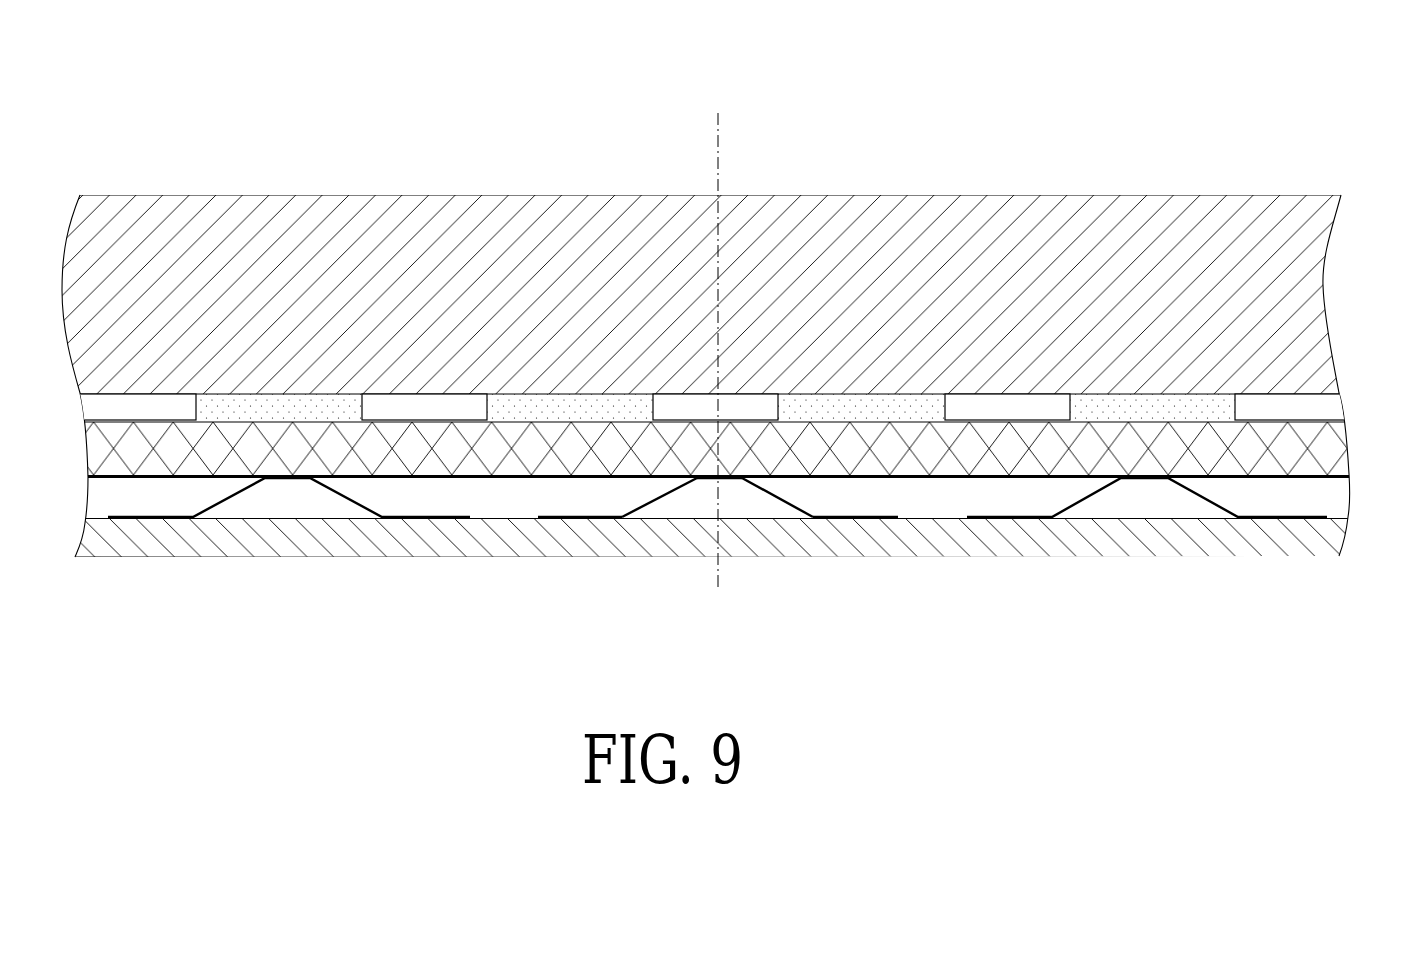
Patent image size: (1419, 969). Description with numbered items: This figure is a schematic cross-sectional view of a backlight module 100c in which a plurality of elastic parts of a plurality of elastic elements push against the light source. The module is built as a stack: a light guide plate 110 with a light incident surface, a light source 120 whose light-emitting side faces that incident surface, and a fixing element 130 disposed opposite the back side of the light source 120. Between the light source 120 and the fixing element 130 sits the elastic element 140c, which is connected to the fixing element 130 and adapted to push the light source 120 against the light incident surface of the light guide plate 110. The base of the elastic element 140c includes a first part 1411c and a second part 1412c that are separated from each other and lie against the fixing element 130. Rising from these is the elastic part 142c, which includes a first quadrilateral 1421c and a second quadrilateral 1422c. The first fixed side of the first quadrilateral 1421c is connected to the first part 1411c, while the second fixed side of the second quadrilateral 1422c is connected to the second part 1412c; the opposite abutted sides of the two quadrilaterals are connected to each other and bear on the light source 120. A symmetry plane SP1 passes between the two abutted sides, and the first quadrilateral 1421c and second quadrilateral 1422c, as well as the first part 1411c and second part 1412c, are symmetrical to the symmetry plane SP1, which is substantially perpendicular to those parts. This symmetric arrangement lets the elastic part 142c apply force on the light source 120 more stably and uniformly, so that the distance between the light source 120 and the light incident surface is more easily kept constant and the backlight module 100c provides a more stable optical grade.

The backlight module 100c is at (107, 102).
The light guide plate 110 is at (1297, 302).
The light source 120 is at (573, 405).
The fixing element 130 is at (1288, 542).
The elastic element 140c is at (702, 585).
The first part 1411c is at (547, 520).
The second part 1412c is at (868, 520).
The elastic part 142c is at (717, 585).
The first quadrilateral 1421c is at (662, 498).
The second quadrilateral 1422c is at (781, 499).
The symmetry plane SP1 is at (718, 113).